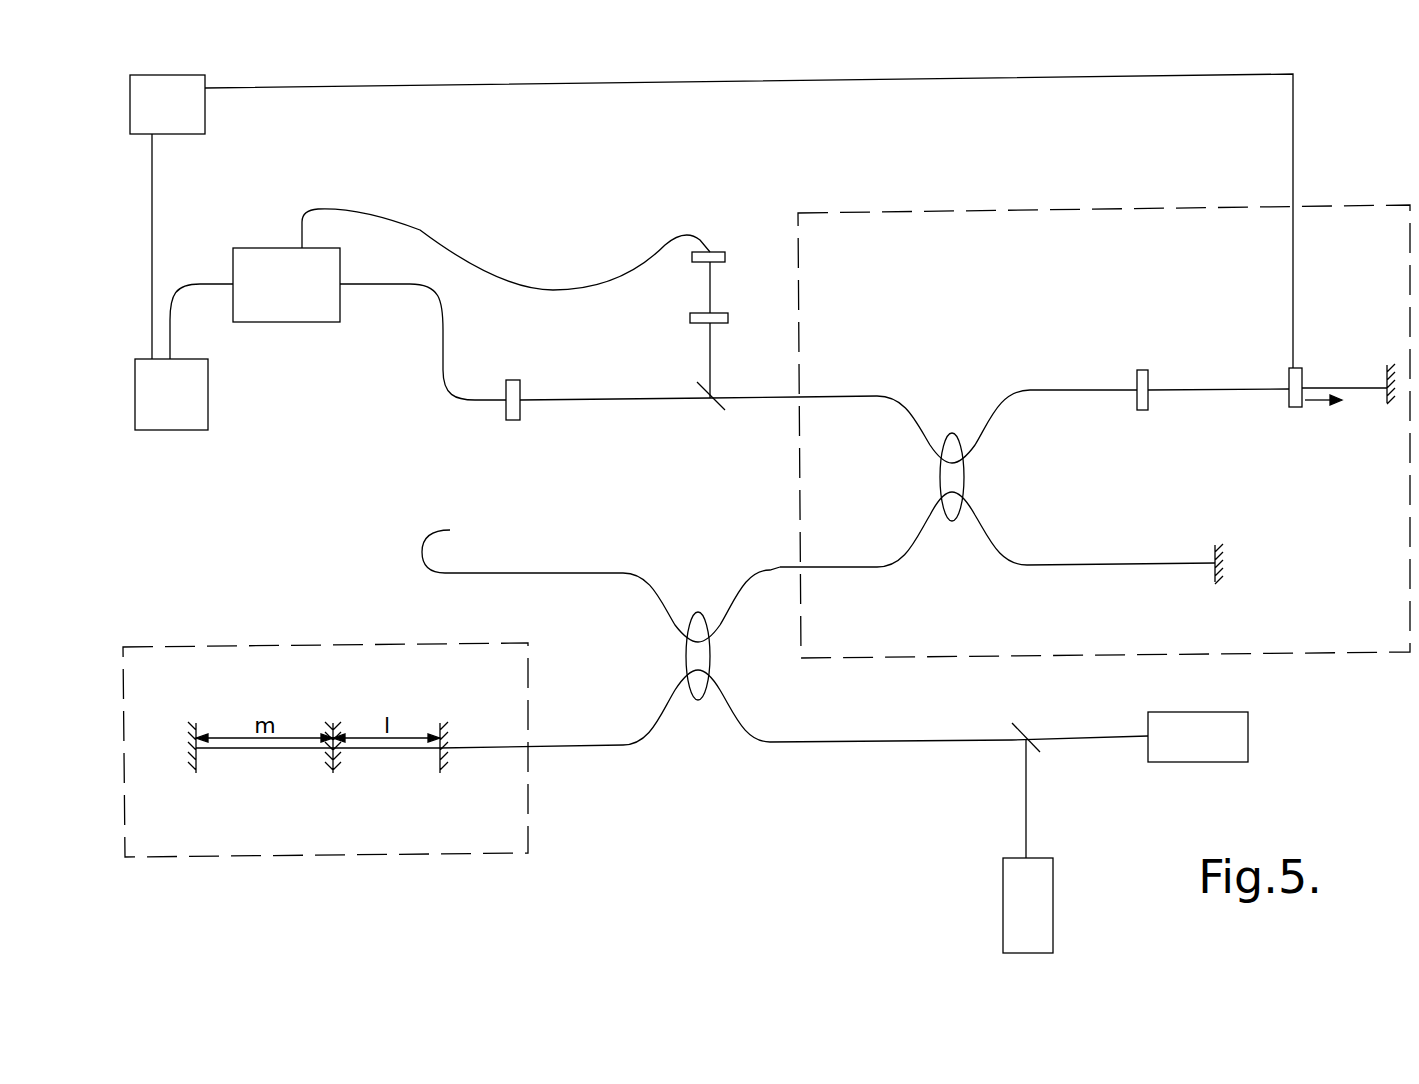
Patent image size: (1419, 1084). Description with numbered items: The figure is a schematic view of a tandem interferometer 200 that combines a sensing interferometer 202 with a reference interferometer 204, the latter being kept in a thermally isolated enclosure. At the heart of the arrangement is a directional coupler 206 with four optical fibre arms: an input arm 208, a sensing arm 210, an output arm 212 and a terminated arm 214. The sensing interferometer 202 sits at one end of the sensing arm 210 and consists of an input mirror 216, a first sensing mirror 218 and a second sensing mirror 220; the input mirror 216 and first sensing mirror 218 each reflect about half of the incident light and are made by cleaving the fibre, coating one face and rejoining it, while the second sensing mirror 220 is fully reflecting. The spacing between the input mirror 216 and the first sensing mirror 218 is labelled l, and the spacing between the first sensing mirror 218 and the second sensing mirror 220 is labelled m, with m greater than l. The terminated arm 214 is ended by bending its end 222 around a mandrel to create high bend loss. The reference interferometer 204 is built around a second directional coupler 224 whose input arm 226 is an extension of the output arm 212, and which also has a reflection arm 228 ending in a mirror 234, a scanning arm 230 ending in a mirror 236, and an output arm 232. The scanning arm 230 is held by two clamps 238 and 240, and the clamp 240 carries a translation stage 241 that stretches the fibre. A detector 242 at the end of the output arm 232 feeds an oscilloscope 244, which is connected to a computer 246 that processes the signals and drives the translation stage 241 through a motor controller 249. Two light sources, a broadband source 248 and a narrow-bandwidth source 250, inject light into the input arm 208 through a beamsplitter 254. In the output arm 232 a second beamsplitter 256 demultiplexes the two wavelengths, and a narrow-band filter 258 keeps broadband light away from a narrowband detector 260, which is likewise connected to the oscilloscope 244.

The tandem interferometer 200 is at (617, 203).
The sensing interferometer 202 is at (258, 645).
The reference interferometer 204 is at (1068, 212).
The directional coupler 206 is at (695, 720).
The input arm 208 is at (880, 745).
The sensing arm 210 is at (578, 748).
The output arm 212 is at (760, 585).
The terminated arm 214 is at (545, 573).
The input mirror 216 is at (440, 775).
The first sensing mirror 218 is at (333, 775).
The second sensing mirror 220 is at (196, 775).
The end 222 is at (450, 528).
The directional coupler 224 is at (980, 398).
The input arm 226 is at (867, 567).
The reflection arm 228 is at (1192, 563).
The scanning arm 230 is at (1108, 390).
The output arm 232 is at (851, 396).
The mirror 234 is at (1228, 560).
The mirror 236 is at (1385, 403).
The clamp 238 is at (1140, 413).
The clamp 240 is at (1303, 378).
The translation stage 241 is at (1303, 408).
The detector 242 is at (522, 390).
The oscilloscope 244 is at (268, 248).
The computer 246 is at (208, 380).
The light source 248 is at (1235, 762).
The motor controller 249 is at (205, 101).
The light source 250 is at (1053, 918).
The beamsplitter 254 is at (1040, 745).
The second beamsplitter 256 is at (720, 404).
The narrow-band filter 258 is at (718, 312).
The narrowband detector 260 is at (722, 252).